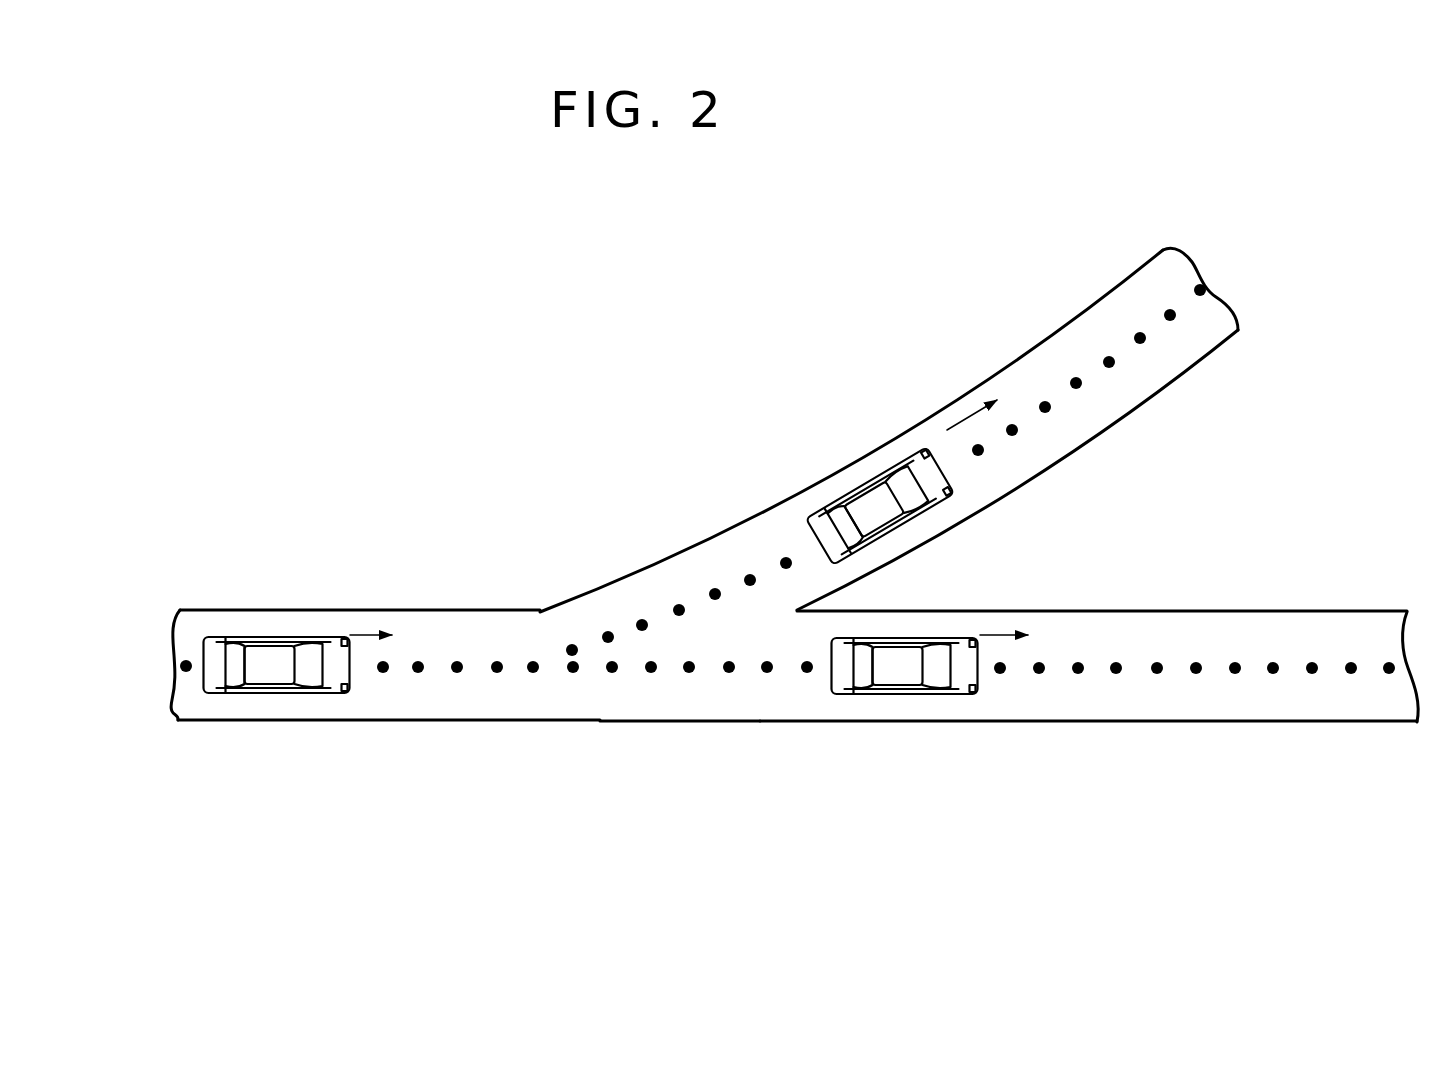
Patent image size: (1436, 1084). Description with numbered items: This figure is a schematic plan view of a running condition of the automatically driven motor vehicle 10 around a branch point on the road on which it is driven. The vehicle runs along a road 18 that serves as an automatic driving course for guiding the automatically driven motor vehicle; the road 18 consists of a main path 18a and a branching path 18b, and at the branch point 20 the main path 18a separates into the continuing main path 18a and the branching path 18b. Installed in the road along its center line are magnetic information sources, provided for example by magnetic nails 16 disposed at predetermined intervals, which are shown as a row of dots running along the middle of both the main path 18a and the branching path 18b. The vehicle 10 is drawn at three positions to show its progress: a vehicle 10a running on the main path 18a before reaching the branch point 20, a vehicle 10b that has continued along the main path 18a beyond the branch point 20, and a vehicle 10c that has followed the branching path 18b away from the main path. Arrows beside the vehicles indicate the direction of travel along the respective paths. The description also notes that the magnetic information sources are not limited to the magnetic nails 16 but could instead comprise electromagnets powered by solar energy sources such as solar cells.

The automatically driven motor vehicle 10 is at (1241, 830).
The automatically driven motor vehicle 10a is at (286, 697).
The automatically driven motor vehicle 10b is at (918, 697).
The automatically driven motor vehicle 10c is at (897, 458).
The magnetic nails 16 is at (457, 673).
The road 18 is at (631, 398).
The main path 18a is at (225, 722).
The branching path 18b is at (993, 373).
The branch point 20 is at (678, 727).